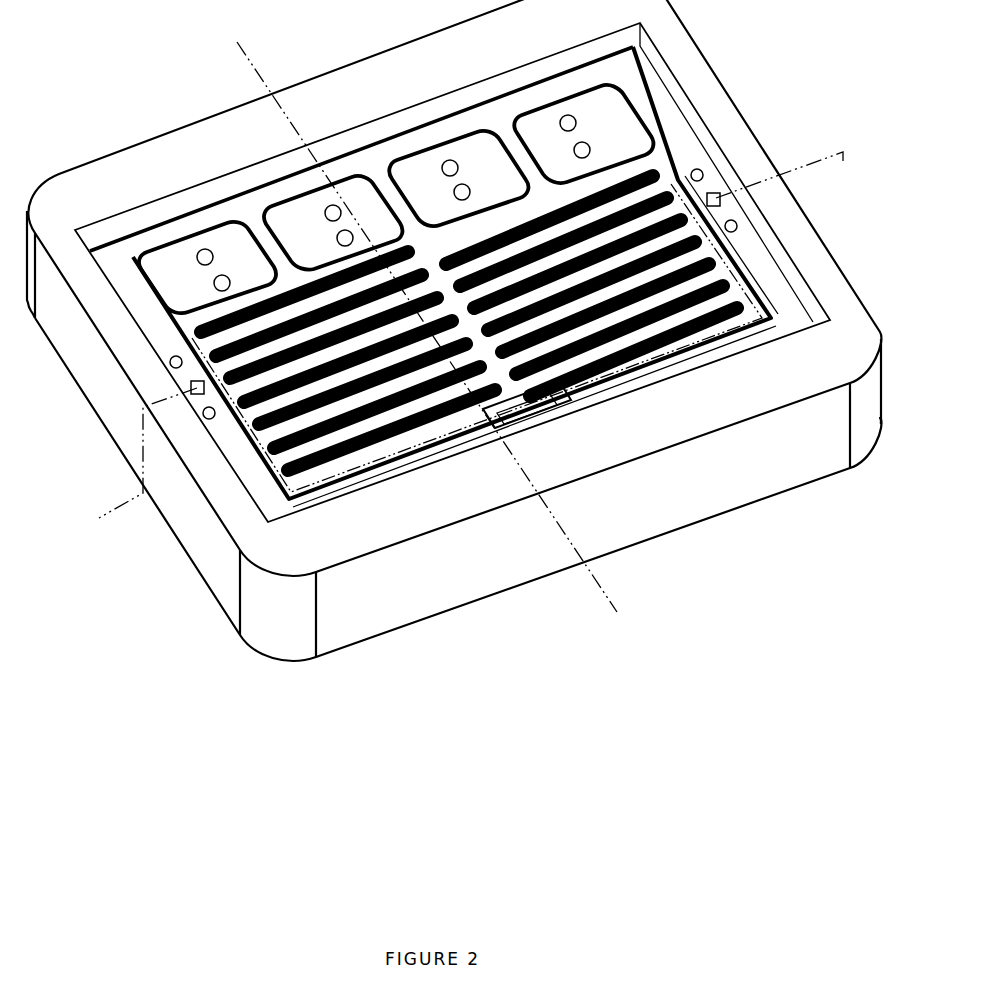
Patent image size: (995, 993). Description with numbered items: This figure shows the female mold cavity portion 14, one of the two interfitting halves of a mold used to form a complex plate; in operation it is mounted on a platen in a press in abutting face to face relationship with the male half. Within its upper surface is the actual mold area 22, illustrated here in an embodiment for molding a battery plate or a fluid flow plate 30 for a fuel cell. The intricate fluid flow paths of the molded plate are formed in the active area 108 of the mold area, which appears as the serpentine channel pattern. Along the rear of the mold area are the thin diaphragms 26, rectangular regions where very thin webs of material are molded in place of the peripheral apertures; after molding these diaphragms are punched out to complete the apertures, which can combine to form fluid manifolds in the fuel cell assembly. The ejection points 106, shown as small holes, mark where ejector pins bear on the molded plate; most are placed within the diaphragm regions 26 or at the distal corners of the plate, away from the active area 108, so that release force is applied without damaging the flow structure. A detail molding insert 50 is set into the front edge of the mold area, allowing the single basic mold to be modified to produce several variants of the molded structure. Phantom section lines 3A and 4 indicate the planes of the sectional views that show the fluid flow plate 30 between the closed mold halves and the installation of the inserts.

The female mold cavity portion 14 is at (488, 595).
The mold area 22 is at (776, 290).
The diaphragms 26 is at (396, 199).
The fluid flow plate 30 is at (720, 197).
The detail molding insert 50 is at (557, 420).
The ejection points 106 is at (215, 279).
The active area 108 is at (655, 320).
The section line 3A is at (235, 40).
The section line 4 is at (99, 516).